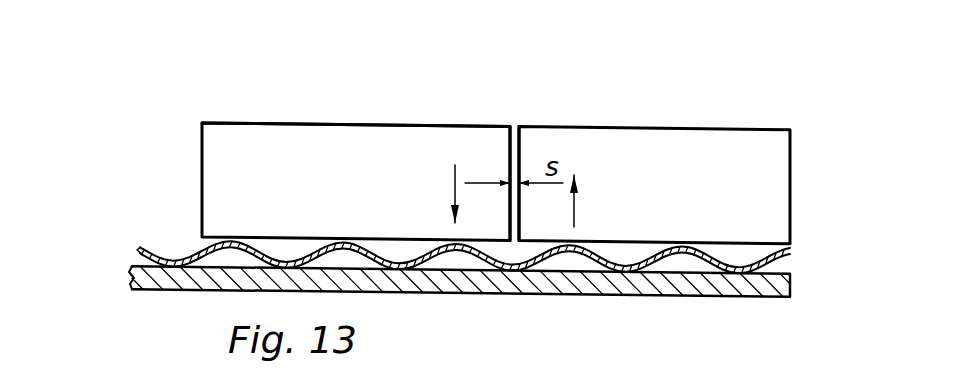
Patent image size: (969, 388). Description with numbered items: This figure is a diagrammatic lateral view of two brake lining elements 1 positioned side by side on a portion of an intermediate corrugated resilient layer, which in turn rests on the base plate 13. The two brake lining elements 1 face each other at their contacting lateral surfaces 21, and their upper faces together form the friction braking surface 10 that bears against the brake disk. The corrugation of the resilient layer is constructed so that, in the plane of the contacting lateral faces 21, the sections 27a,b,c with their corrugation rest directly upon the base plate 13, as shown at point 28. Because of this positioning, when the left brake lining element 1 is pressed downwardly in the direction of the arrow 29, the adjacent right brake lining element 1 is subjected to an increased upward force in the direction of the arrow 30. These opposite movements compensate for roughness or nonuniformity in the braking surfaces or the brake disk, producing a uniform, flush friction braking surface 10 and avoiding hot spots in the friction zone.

The brake lining element 1 is at (253, 160).
The friction braking surface 10 is at (258, 123).
The contacting lateral surface 21 is at (514, 183).
The downward displacement arrow 29 is at (455, 180).
The arrow 30 is at (578, 207).
The sections of the corrugation 27a,b,c is at (163, 260).
The point 28 is at (513, 272).
The base plate 13 is at (678, 288).